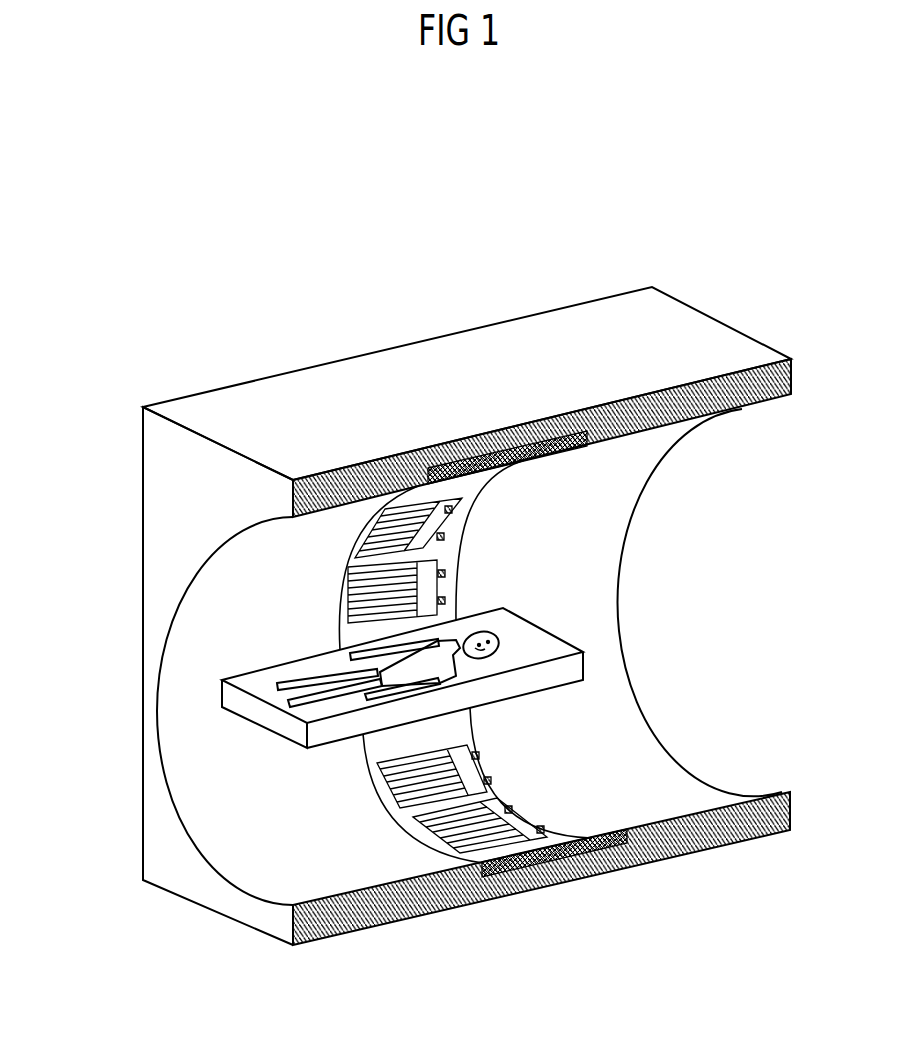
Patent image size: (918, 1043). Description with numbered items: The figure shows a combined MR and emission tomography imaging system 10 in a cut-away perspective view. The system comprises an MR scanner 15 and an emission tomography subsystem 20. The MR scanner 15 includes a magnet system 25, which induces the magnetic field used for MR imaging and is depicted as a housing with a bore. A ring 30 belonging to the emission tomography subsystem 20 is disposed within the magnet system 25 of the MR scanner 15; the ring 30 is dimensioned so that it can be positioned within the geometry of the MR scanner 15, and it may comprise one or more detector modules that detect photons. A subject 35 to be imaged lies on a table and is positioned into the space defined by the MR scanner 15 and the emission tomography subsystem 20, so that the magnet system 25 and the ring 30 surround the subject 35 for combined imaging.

The combined MR and emission tomography imaging system 10 is at (507, 273).
The MR scanner 15 is at (348, 350).
The emission tomography subsystem 20 is at (382, 820).
The magnet system 25 is at (143, 513).
The ring 30 is at (365, 762).
The subject 35 is at (482, 637).